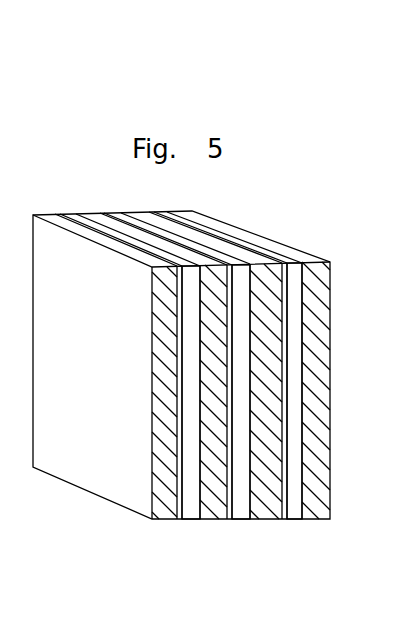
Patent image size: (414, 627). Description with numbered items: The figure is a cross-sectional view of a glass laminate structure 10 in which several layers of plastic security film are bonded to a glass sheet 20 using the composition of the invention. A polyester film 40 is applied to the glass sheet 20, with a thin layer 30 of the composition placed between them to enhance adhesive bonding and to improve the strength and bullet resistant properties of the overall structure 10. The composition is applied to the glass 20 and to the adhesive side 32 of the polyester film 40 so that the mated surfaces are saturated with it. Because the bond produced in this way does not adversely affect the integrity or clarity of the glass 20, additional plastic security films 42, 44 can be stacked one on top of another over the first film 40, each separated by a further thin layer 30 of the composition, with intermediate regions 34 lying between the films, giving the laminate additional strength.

The glass laminate structure 10 is at (287, 206).
The glass sheet 20 is at (322, 276).
The thin layer 30 is at (183, 522).
The adhesive side 32 is at (281, 522).
The intermediate layer 34 is at (177, 522).
The polyester film 40 is at (273, 335).
The plastic security film 42 is at (212, 396).
The plastic security film 44 is at (165, 448).